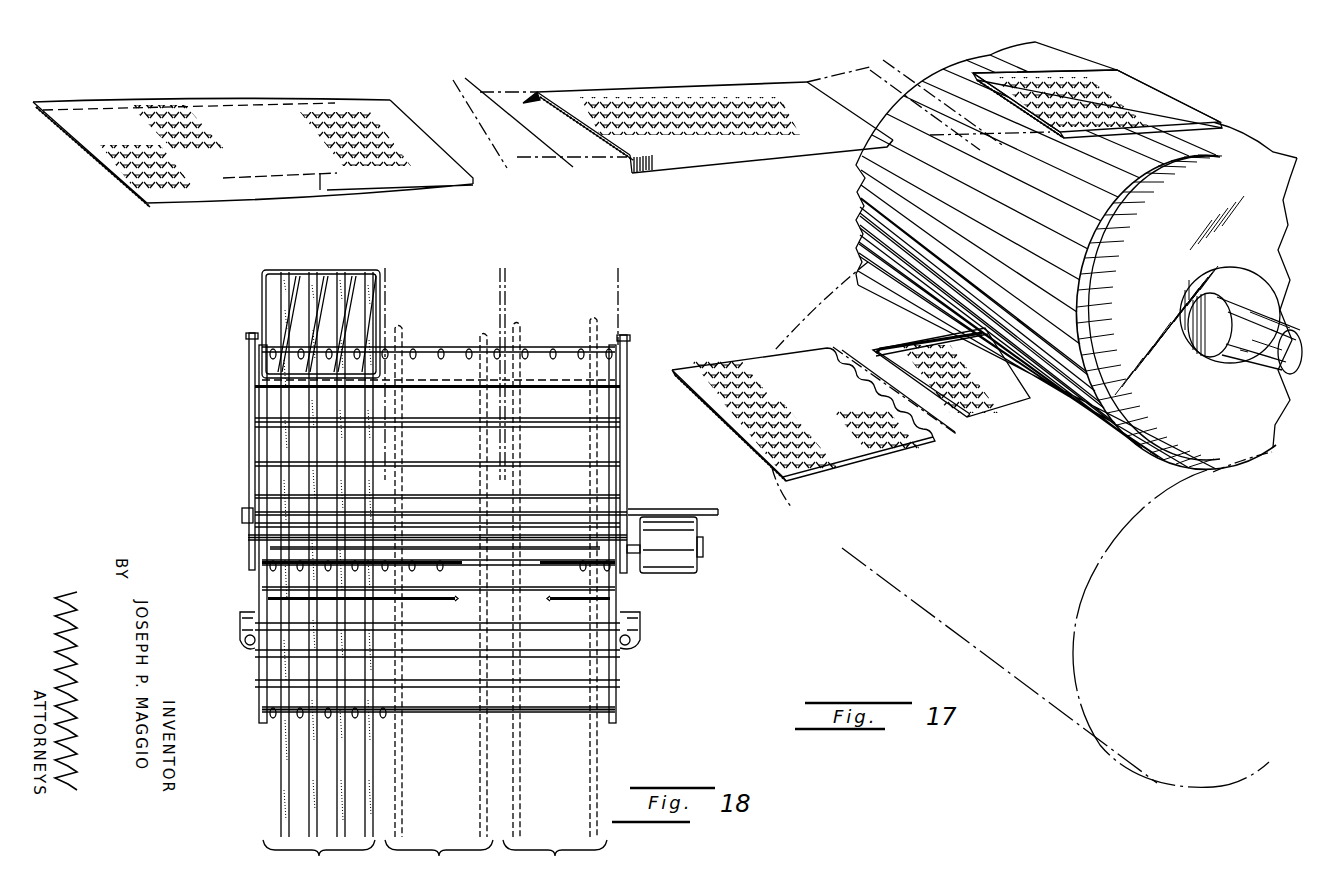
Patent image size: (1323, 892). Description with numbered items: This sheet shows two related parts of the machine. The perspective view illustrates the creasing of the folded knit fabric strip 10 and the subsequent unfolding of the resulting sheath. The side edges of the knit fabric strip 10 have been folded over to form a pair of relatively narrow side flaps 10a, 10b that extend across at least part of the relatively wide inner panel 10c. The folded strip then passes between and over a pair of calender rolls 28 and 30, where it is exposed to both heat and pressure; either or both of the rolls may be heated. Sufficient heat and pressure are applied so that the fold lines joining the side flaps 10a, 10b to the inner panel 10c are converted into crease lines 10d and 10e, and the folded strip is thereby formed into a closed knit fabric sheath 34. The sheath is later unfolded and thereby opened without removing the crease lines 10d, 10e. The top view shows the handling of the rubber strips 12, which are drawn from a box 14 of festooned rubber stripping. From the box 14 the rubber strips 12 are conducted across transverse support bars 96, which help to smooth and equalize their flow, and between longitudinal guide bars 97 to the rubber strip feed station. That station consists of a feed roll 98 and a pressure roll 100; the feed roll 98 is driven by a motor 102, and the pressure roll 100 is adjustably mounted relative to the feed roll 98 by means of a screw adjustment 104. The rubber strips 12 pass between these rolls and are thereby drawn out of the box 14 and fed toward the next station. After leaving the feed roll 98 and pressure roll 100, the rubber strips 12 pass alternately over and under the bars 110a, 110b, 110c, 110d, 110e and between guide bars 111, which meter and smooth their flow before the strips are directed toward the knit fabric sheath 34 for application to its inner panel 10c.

In FIG. 17, the knit fabric strip 10 is at (853, 450).
In FIG. 17, the side flap 10a is at (207, 193).
In FIG. 17, the side flap 10b is at (197, 98).
In FIG. 17, the inner panel 10c is at (263, 120).
In FIG. 17, the crease line 10d is at (320, 190).
In FIG. 17, the crease line 10e is at (100, 108).
In FIG. 18, the rubber strips 12 is at (363, 817).
In FIG. 18, the box 14 is at (262, 295).
In FIG. 17, the calender roll 28 is at (922, 604).
In FIG. 17, the calender roll 30 is at (1196, 432).
In FIG. 17, the closed knit fabric sheath 34 is at (1107, 87).
In FIG. 18, the transverse support bars 96 is at (263, 455).
In FIG. 18, the longitudinal guide bars 97 is at (248, 472).
In FIG. 18, the feed roll 98 is at (550, 545).
In FIG. 18, the pressure roll 100 is at (541, 577).
In FIG. 18, the motor 102 is at (683, 577).
In FIG. 18, the screw adjustment 104 is at (250, 640).
In FIG. 18, the bar 110a is at (425, 605).
In FIG. 18, the bar 110b is at (421, 633).
In FIG. 18, the bar 110c is at (426, 660).
In FIG. 18, the bar 110d is at (421, 689).
In FIG. 18, the bar 110e is at (427, 714).
In FIG. 18, the guide bars 111 is at (262, 700).